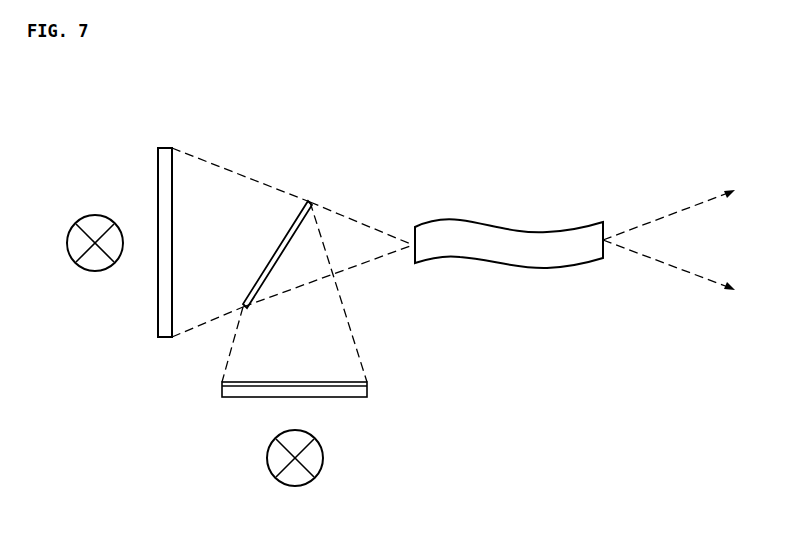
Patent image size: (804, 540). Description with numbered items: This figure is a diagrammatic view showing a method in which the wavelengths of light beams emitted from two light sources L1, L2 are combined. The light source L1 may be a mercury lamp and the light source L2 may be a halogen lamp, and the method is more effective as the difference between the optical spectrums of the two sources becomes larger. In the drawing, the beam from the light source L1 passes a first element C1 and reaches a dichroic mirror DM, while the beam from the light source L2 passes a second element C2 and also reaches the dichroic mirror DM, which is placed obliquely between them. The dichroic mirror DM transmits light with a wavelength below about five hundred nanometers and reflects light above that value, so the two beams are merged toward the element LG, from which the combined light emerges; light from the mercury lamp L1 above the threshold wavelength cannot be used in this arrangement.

The light source L1 is at (90, 215).
The first collimator C1 is at (158, 182).
The dichroic mirror DM is at (280, 246).
The second collimator C2 is at (327, 397).
The light source L2 is at (268, 460).
The light guide LG is at (550, 228).